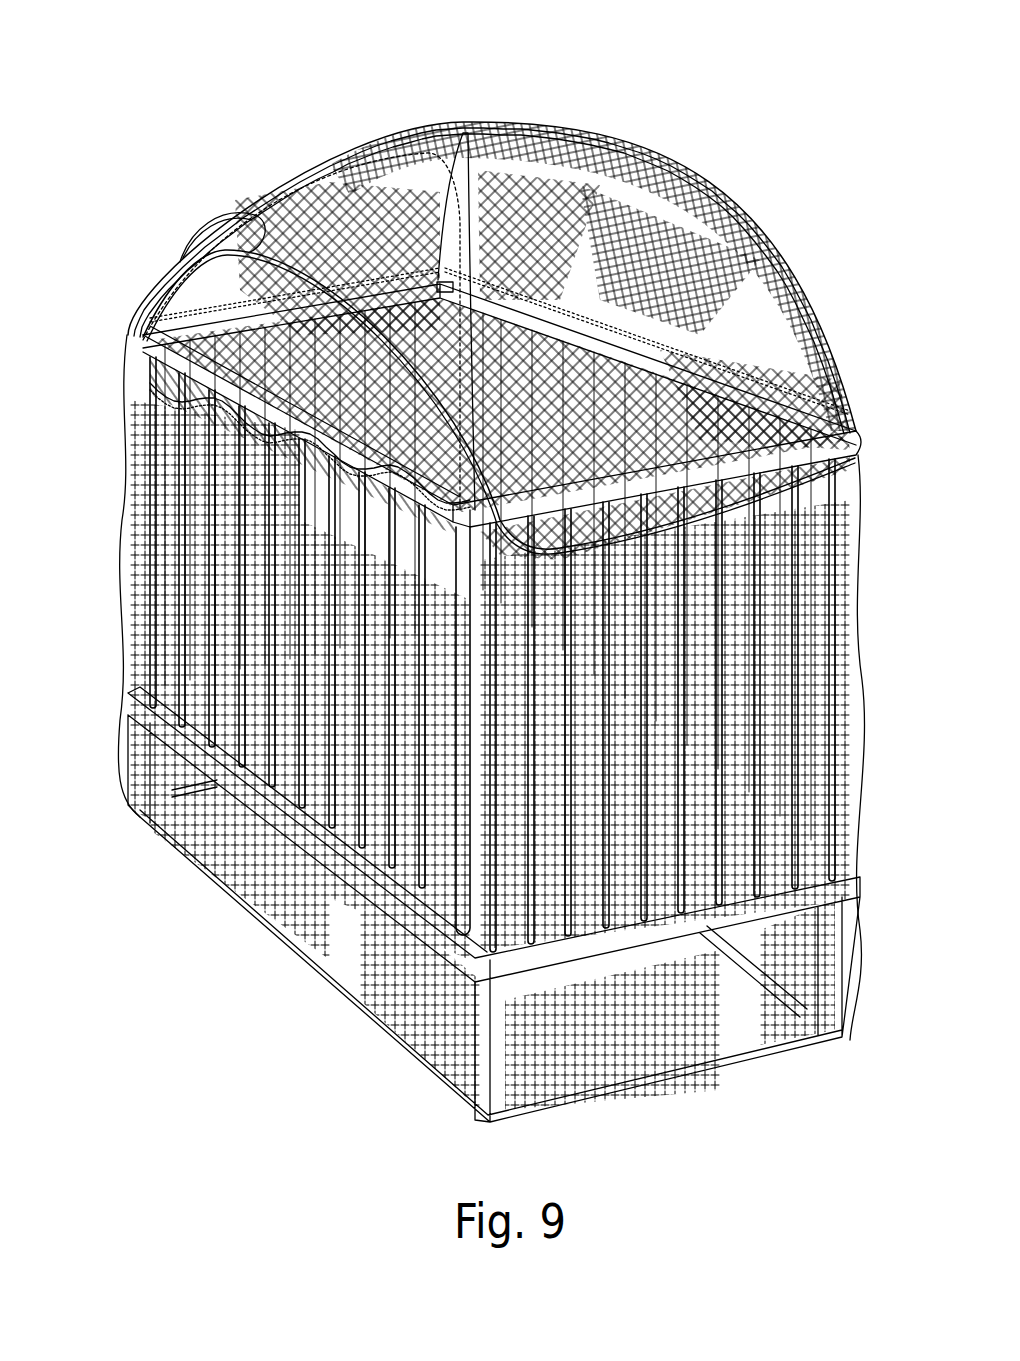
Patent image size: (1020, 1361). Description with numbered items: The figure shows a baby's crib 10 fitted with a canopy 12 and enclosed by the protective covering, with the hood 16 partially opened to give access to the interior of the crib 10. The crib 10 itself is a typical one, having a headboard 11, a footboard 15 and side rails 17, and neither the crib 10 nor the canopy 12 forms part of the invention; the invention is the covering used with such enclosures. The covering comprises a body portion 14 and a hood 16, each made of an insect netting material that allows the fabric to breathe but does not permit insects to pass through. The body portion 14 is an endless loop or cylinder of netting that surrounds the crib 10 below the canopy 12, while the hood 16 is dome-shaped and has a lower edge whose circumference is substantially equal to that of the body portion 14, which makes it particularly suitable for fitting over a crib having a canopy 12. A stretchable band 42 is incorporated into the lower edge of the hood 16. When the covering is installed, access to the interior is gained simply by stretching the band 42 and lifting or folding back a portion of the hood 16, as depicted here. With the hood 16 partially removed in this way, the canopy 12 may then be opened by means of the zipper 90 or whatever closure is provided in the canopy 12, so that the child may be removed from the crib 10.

The crib 10 is at (770, 99).
The headboard 11 is at (170, 320).
The canopy 12 is at (363, 92).
The body portion 14 is at (855, 693).
The footboard 15 is at (860, 432).
The hood 16 is at (660, 178).
The side rails 17 is at (175, 377).
The stretchable band 42 is at (290, 303).
The zipper 90 is at (228, 252).